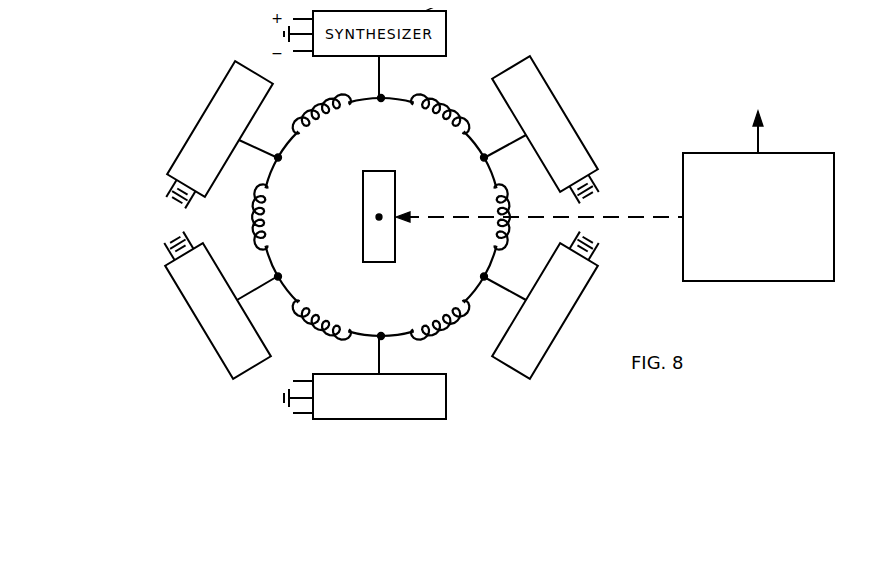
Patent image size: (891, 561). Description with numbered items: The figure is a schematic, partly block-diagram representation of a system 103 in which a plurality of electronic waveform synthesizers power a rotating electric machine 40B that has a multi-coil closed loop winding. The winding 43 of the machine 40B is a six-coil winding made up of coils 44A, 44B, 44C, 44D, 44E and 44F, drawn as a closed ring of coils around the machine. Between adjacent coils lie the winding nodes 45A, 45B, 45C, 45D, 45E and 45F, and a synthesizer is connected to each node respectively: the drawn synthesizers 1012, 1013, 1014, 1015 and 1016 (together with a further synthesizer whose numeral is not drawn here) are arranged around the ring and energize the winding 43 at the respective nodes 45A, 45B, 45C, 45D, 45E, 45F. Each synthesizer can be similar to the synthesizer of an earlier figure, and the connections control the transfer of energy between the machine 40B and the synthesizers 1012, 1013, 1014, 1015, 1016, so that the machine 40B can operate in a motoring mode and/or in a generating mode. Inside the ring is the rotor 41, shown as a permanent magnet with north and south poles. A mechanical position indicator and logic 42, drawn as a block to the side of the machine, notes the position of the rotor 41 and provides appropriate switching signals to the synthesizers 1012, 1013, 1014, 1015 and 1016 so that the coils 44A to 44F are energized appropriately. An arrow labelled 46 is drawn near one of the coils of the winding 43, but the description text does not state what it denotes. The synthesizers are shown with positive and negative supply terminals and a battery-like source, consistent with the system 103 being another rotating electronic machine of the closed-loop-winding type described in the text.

The rotating electric machine 40B is at (387, 217).
The rotor 41 is at (395, 216).
The logic 42 is at (770, 191).
The winding 43 is at (453, 85).
The coil 44A is at (439, 118).
The coil 44B is at (481, 218).
The coil 44C is at (439, 310).
The coil 44D is at (325, 312).
The coil 44E is at (284, 216).
The coil 44F is at (322, 119).
The winding node 45A is at (387, 111).
The winding node 45B is at (483, 151).
The winding node 45C is at (506, 278).
The winding node 45D is at (402, 348).
The winding node 45E is at (275, 270).
The winding node 45F is at (279, 154).
The current direction arrow 46 is at (307, 354).
The system 103 is at (268, 398).
The synthesizer 1012 is at (557, 137).
The synthesizer 1013 is at (559, 298).
The synthesizer 1014 is at (411, 377).
The synthesizer 1015 is at (198, 299).
The synthesizer 1016 is at (208, 141).